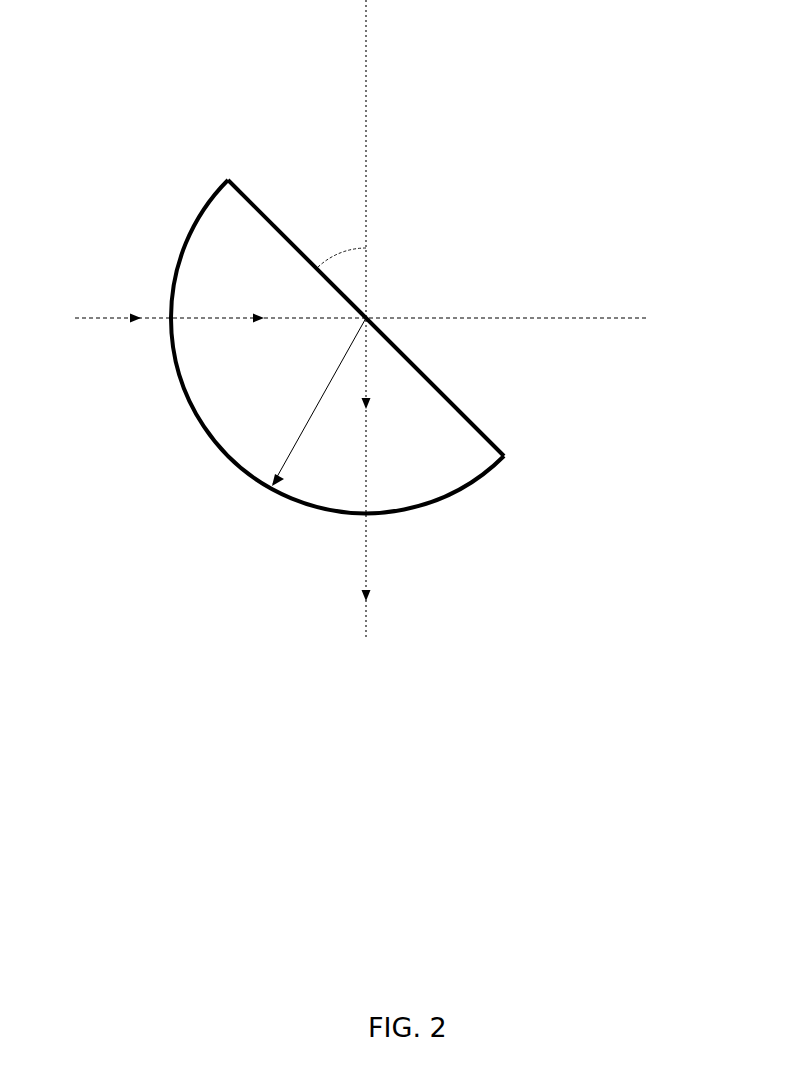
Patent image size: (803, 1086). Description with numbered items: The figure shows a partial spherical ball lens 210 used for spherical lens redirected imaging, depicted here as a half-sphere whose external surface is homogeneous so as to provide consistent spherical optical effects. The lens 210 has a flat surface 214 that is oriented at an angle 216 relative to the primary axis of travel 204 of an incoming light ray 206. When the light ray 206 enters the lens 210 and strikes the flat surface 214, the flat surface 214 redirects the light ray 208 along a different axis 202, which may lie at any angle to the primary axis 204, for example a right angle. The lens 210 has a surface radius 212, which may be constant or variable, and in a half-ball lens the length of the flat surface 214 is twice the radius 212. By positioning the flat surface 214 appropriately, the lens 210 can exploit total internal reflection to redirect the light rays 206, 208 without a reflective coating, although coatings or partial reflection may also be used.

The different axis 202 is at (363, 40).
The primary axis of travel 204 is at (636, 315).
The light ray 206 is at (118, 318).
The redirected light ray 208 is at (367, 570).
The partial spherical ball lens 210 is at (207, 430).
The surface radius 212 is at (308, 412).
The flat surface 214 is at (244, 190).
The angle 216 is at (316, 258).